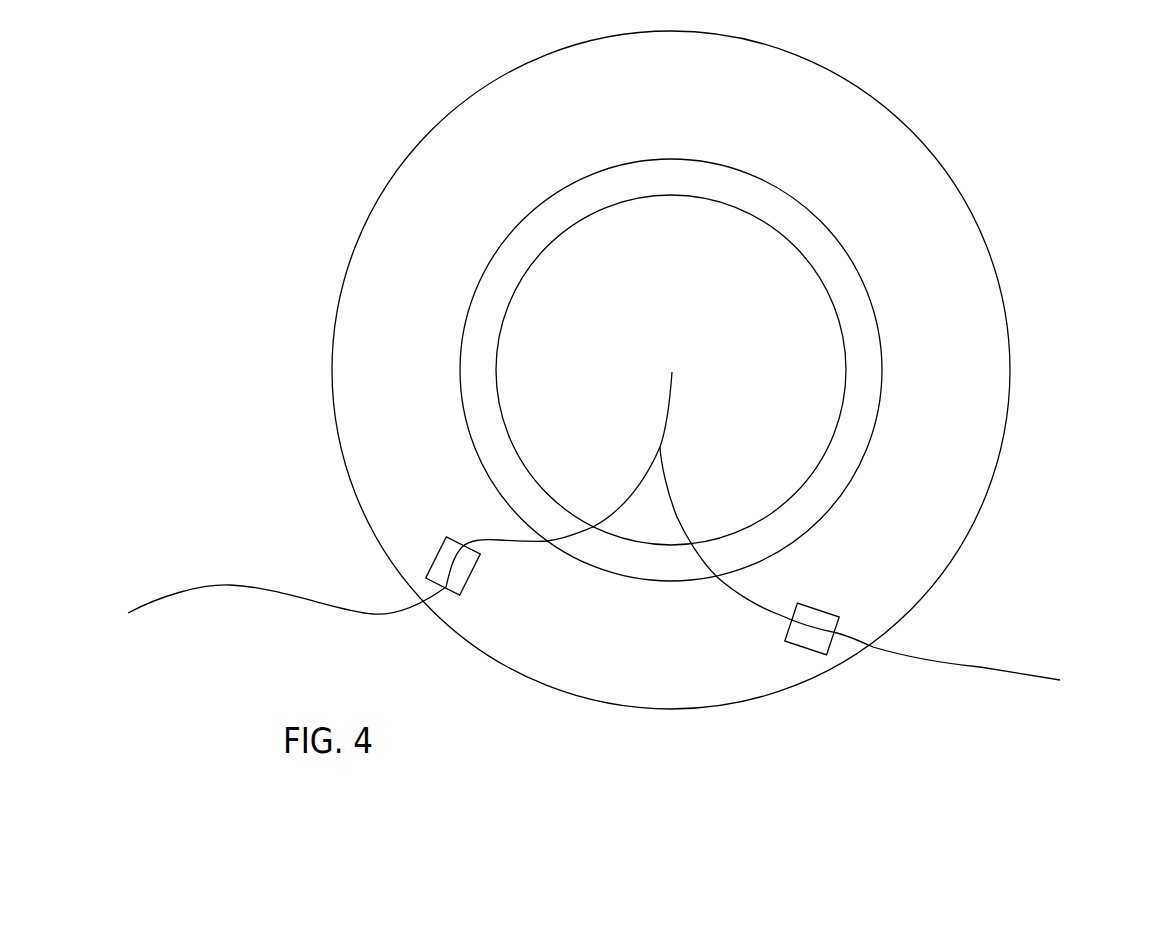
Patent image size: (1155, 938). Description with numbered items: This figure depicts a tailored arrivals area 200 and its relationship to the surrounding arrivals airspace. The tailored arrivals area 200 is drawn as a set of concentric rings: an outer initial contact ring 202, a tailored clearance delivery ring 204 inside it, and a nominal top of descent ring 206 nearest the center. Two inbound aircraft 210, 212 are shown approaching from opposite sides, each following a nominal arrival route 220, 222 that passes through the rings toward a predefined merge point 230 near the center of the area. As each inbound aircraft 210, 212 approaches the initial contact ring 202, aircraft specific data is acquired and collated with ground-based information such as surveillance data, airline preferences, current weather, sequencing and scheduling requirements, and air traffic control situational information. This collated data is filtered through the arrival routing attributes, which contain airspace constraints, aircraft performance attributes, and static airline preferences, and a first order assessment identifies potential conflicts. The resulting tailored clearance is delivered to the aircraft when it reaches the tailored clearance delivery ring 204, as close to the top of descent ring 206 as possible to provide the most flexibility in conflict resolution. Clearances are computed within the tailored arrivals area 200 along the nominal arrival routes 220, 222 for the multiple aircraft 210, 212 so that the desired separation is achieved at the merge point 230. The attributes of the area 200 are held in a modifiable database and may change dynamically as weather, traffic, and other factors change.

The tailored arrivals area 200 is at (615, 370).
The initial contact ring 202 is at (1010, 322).
The tailored clearance delivery ring 204 is at (883, 342).
The nominal top of descent ring 206 is at (847, 393).
The inbound aircraft 210 is at (440, 550).
The inbound aircraft 212 is at (823, 610).
The nominal arrival route 220 is at (510, 543).
The nominal arrival route 222 is at (743, 597).
The merge point 230 is at (665, 443).